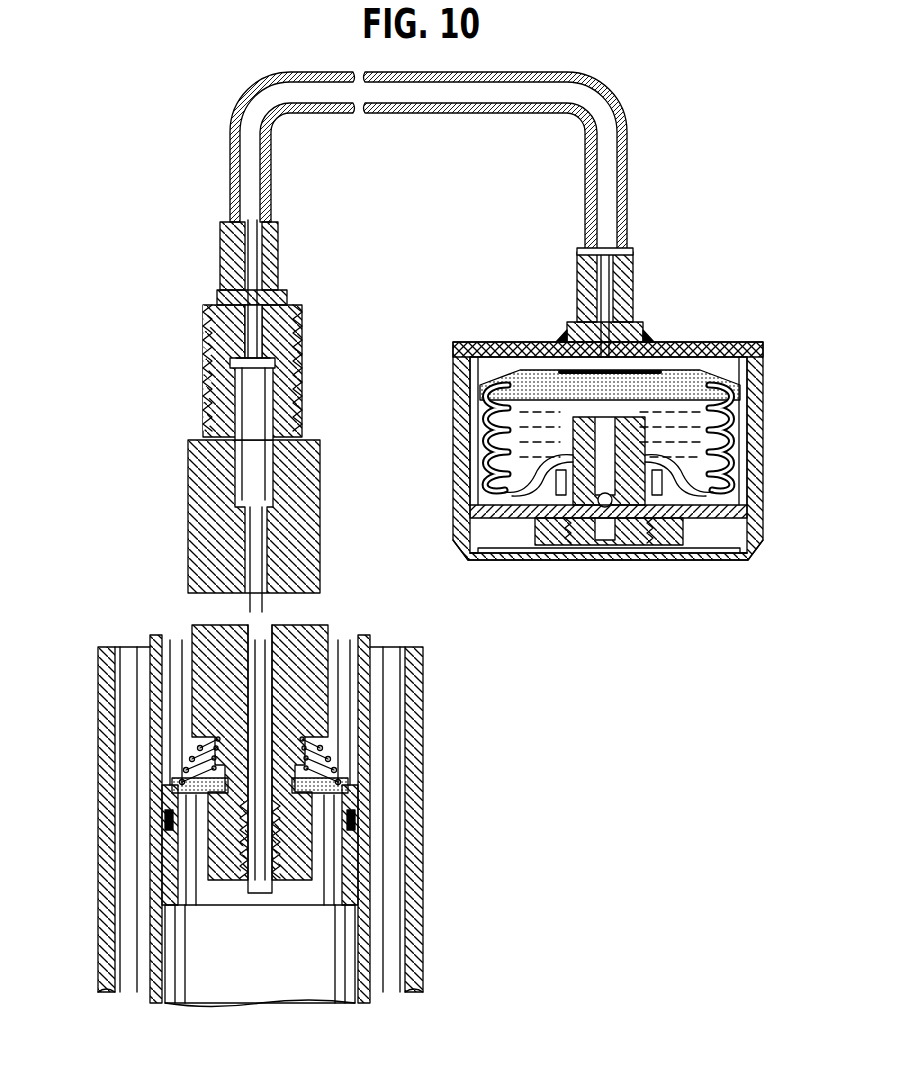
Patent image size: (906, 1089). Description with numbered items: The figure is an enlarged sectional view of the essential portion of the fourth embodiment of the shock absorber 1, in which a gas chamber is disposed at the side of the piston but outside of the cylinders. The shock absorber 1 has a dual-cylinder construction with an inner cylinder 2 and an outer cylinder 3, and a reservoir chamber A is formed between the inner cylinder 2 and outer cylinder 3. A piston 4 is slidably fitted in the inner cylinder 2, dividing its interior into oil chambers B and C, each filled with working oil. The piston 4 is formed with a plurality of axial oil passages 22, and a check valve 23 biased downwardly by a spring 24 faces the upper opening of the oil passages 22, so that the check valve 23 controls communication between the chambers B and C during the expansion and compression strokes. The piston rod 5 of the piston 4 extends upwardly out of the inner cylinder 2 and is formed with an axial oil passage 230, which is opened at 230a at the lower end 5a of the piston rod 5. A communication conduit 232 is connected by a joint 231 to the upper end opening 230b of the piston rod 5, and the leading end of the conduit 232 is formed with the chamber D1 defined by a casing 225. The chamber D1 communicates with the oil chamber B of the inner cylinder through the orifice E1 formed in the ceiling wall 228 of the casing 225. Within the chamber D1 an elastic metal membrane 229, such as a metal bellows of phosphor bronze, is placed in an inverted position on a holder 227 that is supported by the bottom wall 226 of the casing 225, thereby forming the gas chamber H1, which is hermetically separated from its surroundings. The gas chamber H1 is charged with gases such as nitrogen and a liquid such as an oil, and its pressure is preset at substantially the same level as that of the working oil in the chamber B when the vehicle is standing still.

The communication conduit 232 is at (443, 113).
The joint 231 is at (287, 296).
The axial oil passage 230 is at (253, 530).
The upper end opening 230b is at (232, 366).
The lower opening of axial oil passage 230a is at (267, 890).
The piston rod 5 is at (313, 525).
The leading end of piston rod 5a is at (260, 954).
The oil chamber C is at (177, 647).
The reservoir chamber A is at (128, 830).
The oil chamber B is at (207, 987).
The shock absorber 1 is at (92, 797).
The inner cylinder 2 is at (160, 945).
The outer cylinder 3 is at (100, 896).
The piston 4 is at (357, 880).
The axial oil passages 22 is at (332, 810).
The check valve 23 is at (173, 776).
The spring 24 is at (343, 776).
The casing 225 is at (755, 449).
The bottom wall of casing 226 is at (722, 514).
The holder 227 is at (683, 512).
The ceiling wall of casing 228 is at (667, 341).
The elastic metal membrane 229 is at (480, 438).
The orifice E1 is at (607, 320).
The gas chamber H1 is at (534, 440).
The chamber D1 is at (733, 492).